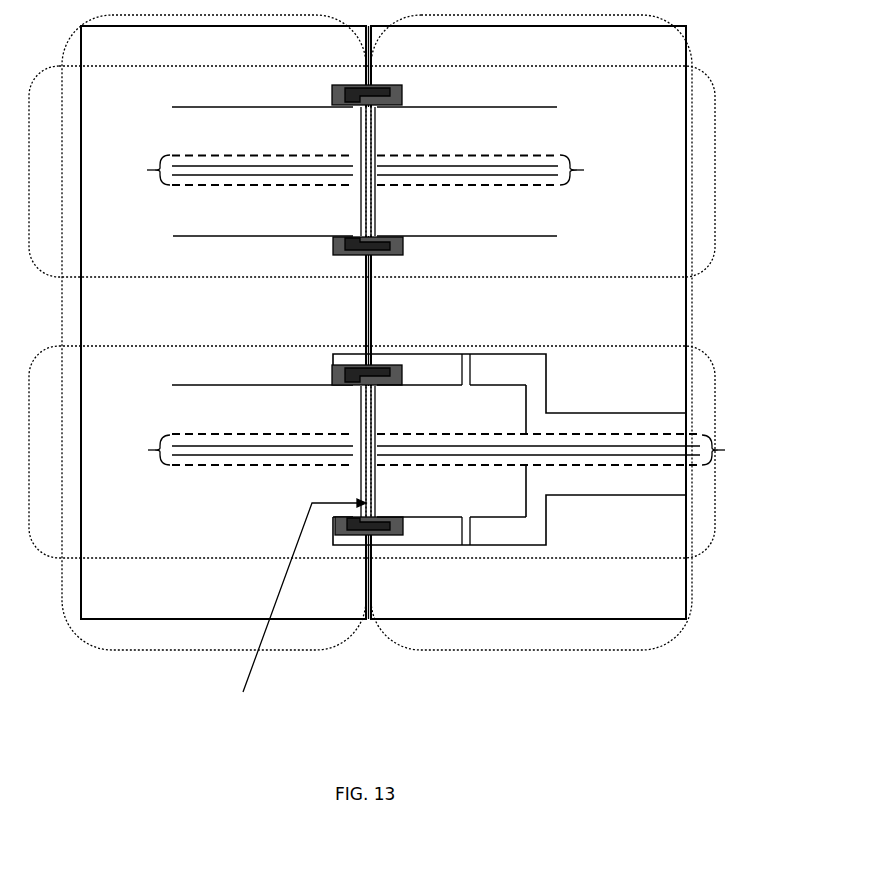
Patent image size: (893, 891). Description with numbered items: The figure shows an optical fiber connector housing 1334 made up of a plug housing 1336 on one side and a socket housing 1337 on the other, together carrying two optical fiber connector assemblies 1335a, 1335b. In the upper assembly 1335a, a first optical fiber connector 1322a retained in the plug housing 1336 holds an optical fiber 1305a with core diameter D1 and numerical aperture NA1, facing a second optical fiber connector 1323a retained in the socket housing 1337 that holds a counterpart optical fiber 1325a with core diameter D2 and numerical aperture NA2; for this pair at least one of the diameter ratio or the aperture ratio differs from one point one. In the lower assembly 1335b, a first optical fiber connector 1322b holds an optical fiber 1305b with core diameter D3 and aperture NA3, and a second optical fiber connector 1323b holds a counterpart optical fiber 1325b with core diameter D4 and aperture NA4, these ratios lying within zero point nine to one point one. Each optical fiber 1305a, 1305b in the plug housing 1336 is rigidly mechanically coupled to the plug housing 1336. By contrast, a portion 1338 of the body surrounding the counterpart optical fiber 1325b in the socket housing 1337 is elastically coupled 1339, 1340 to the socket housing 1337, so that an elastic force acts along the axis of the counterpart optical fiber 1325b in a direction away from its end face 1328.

The optical fiber connector housing 1334 is at (188, 712).
The plug housing 1336 is at (160, 650).
The socket housing 1337 is at (597, 653).
The optical fiber connector assembly 1335a is at (703, 70).
The optical fiber connector assembly 1335b is at (703, 350).
The first optical fiber connector 1322a is at (218, 107).
The second optical fiber connector 1323a is at (488, 107).
The first optical fiber connector 1322b is at (217, 385).
The second optical fiber connector 1323b is at (483, 385).
The optical fiber 1305a is at (220, 181).
The counterpart optical fiber 1325a is at (517, 179).
The optical fiber 1305b is at (221, 468).
The counterpart optical fiber 1325b is at (587, 462).
The end face 1328 is at (296, 373).
The body portion 1338 is at (512, 500).
The elastic coupling 1339 is at (465, 537).
The elastic coupling gap 1340 is at (462, 385).